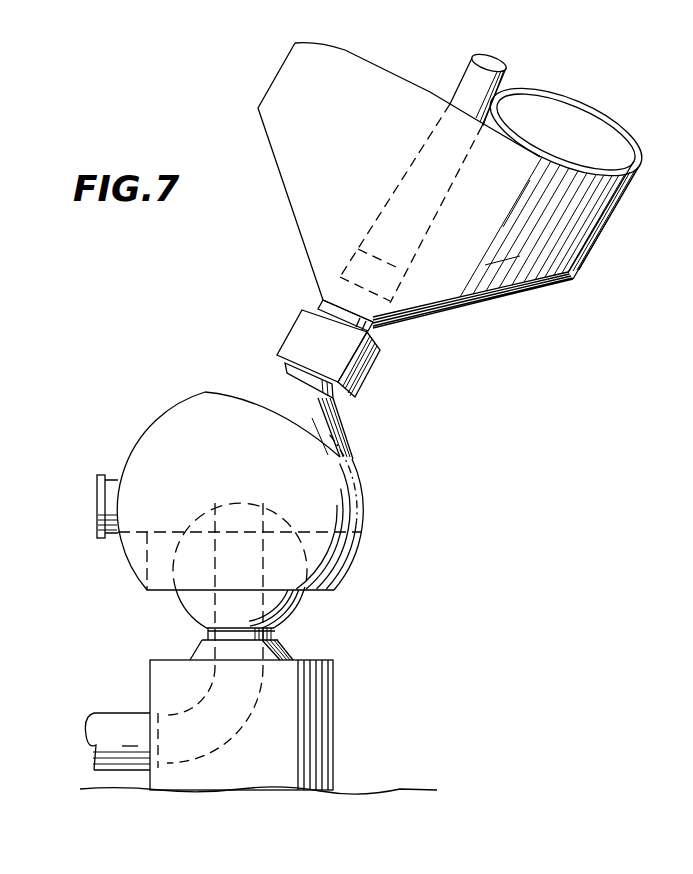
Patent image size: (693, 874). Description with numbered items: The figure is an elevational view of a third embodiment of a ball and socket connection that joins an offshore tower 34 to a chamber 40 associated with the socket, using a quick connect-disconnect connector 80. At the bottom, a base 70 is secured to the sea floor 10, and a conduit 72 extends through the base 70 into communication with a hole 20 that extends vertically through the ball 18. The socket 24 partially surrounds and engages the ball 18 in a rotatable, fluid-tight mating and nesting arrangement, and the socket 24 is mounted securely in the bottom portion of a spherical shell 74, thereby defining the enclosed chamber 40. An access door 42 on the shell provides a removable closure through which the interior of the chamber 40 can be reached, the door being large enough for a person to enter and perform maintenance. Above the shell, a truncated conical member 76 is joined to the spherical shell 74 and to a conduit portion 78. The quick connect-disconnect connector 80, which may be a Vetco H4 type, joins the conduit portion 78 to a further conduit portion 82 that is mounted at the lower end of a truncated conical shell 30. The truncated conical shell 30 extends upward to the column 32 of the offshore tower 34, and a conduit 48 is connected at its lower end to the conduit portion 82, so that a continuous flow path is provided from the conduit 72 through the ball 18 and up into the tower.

The sea floor 10 is at (375, 788).
The ball 18 is at (187, 608).
The hole 20 is at (297, 610).
The socket 24 is at (357, 567).
The truncated conical shell member 30 is at (482, 303).
The column 32 is at (592, 223).
The offshore tower 34 is at (595, 263).
The chamber 40 is at (183, 450).
The access door 42 is at (102, 498).
The conduit 48 is at (508, 72).
The base 70 is at (320, 712).
The conduit 72 is at (112, 727).
The spherical shell 74 is at (363, 497).
The truncated conical member 76 is at (343, 427).
The conduit portion 78 is at (285, 363).
The quick connect-disconnect connector 80 is at (366, 370).
The conduit portion 82 is at (327, 308).